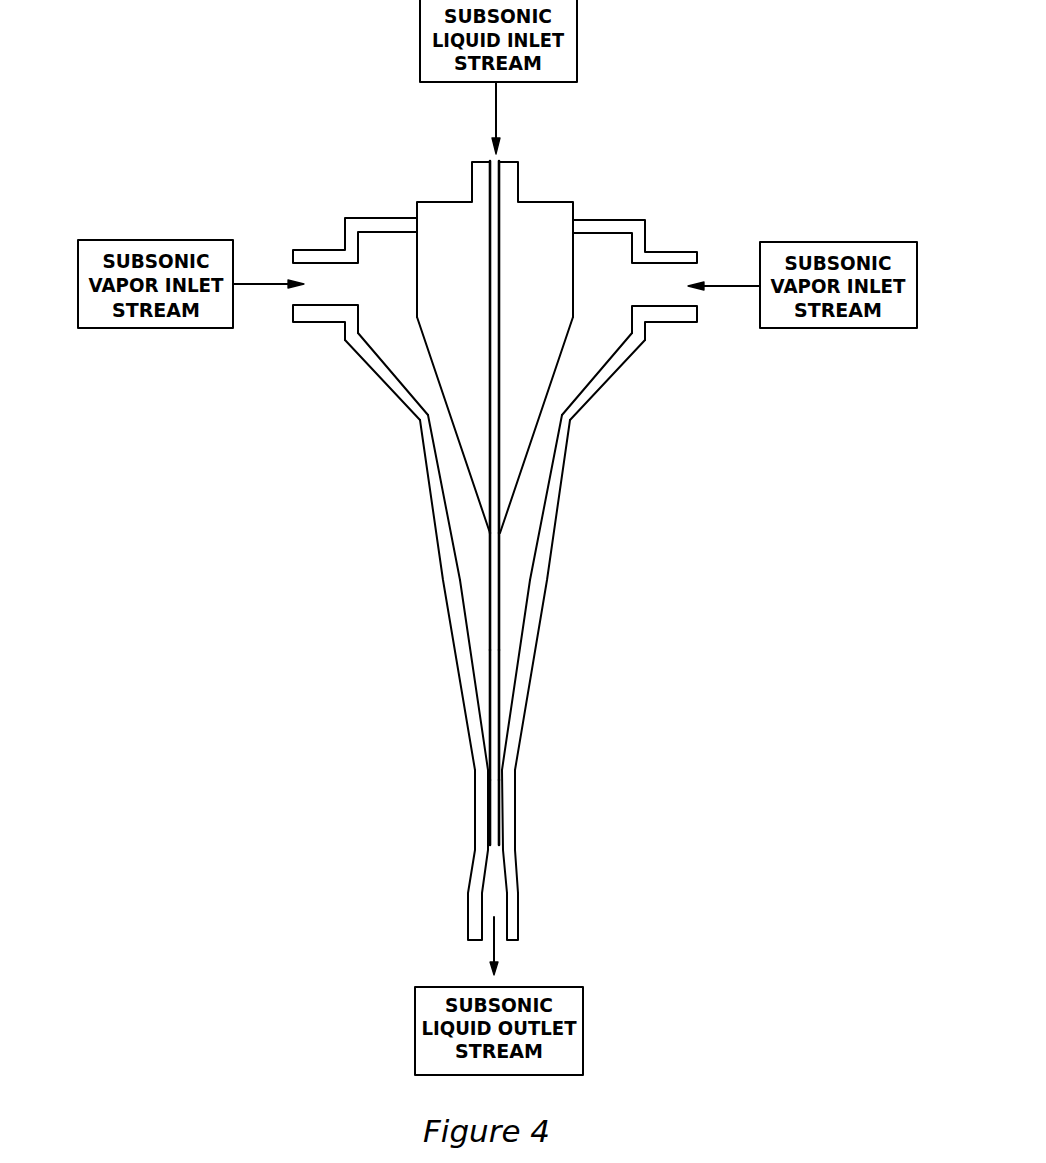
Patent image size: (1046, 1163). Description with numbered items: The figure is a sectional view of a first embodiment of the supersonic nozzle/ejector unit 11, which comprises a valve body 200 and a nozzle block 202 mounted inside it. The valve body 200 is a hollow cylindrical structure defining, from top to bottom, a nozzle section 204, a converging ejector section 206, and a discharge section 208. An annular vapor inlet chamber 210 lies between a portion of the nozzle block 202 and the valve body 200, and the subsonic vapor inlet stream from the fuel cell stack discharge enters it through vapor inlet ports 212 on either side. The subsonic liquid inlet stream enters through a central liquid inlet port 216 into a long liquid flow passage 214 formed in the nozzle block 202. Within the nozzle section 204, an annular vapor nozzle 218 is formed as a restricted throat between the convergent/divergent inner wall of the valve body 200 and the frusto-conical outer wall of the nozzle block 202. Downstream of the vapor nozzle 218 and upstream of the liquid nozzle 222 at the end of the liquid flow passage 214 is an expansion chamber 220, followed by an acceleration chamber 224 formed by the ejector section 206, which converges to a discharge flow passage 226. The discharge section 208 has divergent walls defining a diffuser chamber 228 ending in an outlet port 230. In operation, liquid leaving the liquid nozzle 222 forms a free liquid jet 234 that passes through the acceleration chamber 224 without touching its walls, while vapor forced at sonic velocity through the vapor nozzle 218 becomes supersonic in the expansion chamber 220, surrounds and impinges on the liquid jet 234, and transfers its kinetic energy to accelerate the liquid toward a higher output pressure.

The nozzle/ejector unit 11 is at (704, 105).
The valve body 200 is at (638, 349).
The nozzle block 202 is at (540, 202).
The nozzle section 204 is at (597, 375).
The converging ejector section 206 is at (542, 582).
The discharge section 208 is at (516, 870).
The annular vapor inlet chamber 210 is at (410, 292).
The vapor inlet port 212 is at (680, 262).
The liquid flow passage 214 is at (494, 436).
The central liquid inlet port 216 is at (494, 171).
The annular vapor nozzle 218 is at (428, 410).
The expansion chamber 220 is at (531, 487).
The liquid nozzle 222 is at (496, 532).
The acceleration chamber 224 is at (482, 670).
The discharge flow passage 226 is at (495, 774).
The diffuser chamber 228 is at (495, 900).
The outlet port 230 is at (508, 935).
The free liquid jet 234 is at (499, 650).